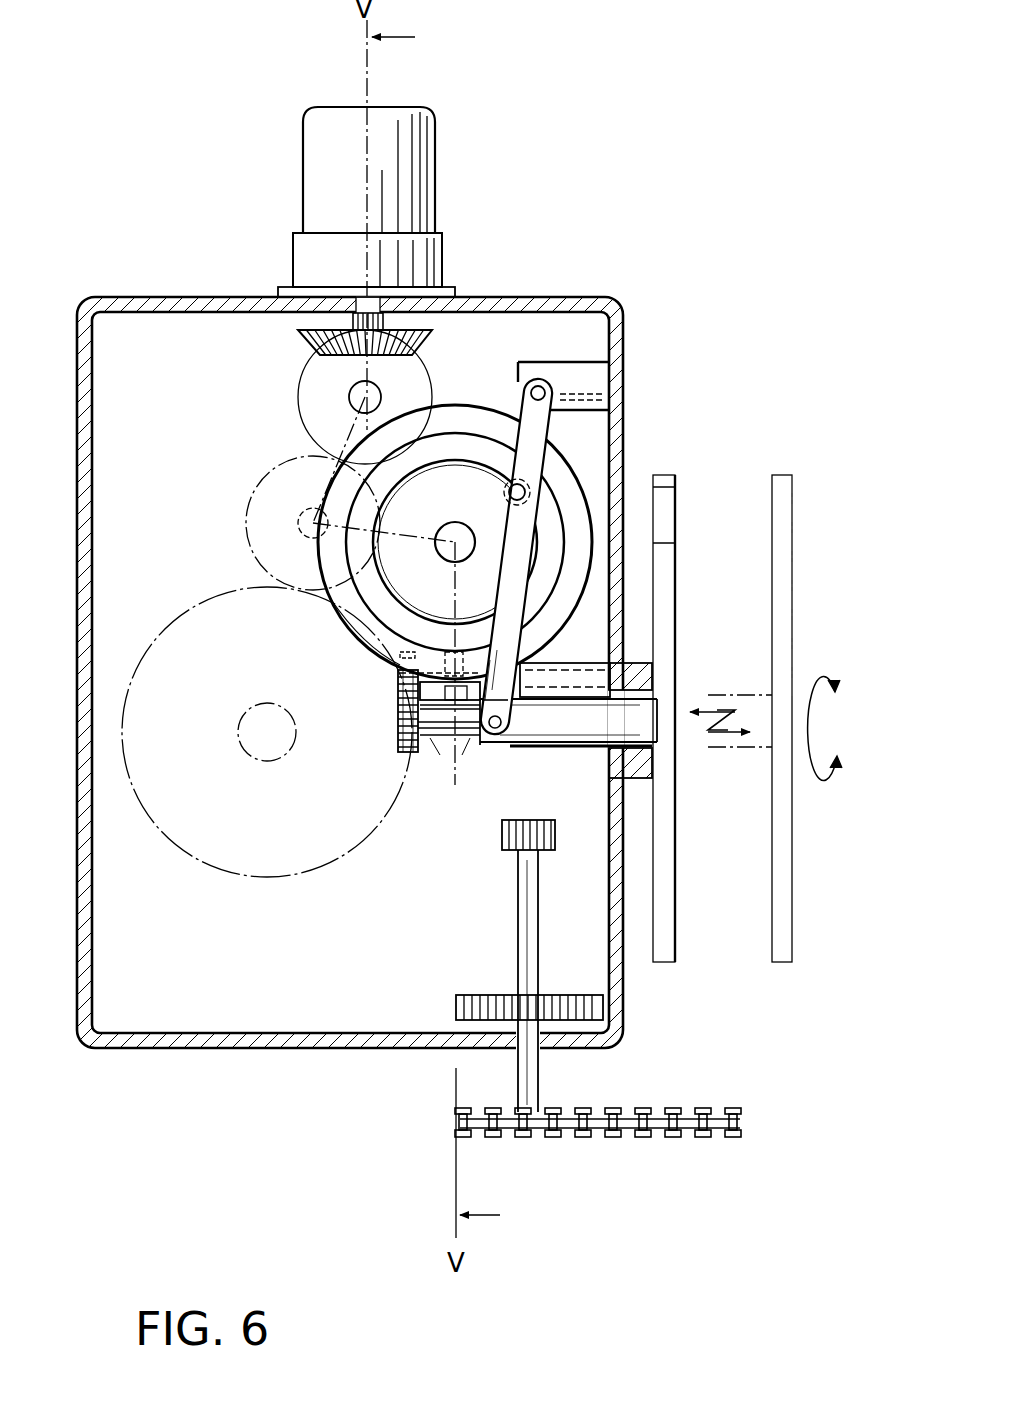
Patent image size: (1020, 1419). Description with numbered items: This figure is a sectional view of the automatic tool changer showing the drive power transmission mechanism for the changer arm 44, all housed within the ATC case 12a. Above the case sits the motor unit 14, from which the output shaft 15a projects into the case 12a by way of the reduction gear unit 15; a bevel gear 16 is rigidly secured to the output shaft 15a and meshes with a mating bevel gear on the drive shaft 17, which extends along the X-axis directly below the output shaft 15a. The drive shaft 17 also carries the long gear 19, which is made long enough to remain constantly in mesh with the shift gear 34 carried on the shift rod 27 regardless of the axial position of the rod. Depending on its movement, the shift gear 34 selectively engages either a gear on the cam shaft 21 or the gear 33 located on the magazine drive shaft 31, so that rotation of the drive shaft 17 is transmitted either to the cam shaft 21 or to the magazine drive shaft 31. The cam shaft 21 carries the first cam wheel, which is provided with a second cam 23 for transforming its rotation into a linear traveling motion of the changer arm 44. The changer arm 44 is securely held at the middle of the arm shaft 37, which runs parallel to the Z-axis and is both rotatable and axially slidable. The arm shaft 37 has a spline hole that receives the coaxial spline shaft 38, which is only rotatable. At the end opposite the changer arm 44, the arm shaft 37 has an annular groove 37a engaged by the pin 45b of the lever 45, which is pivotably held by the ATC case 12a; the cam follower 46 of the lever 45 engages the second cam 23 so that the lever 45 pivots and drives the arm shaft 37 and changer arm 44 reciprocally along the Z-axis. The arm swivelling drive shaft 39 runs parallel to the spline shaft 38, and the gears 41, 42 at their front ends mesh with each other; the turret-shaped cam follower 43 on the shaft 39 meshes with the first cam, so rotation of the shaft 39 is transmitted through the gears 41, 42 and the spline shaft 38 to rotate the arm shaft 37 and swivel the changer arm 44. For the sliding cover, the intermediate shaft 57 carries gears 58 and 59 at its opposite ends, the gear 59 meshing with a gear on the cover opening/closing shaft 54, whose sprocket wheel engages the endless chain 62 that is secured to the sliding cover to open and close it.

The ATC case 12a is at (620, 432).
The motor 14 is at (420, 143).
The reduction gear unit 15 is at (428, 252).
The output shaft 15a is at (358, 322).
The bevel gear 16 is at (437, 279).
The drive shaft 17 is at (422, 360).
The long gear 19 is at (302, 384).
The cam shaft 21 is at (326, 497).
The second cam 23 is at (328, 598).
The shift rod 27 is at (300, 540).
The magazine drive shaft 31 is at (256, 752).
The gear 33 is at (168, 628).
The shift gear 34 is at (292, 462).
The arm shaft 37 is at (640, 704).
The annular groove 37a is at (490, 755).
The spline shaft 38 is at (420, 750).
The arm swivelling drive shaft 39 is at (598, 655).
The gear 41 is at (398, 677).
The gear 42 is at (398, 708).
The turret-shaped cam follower 43 is at (400, 688).
The changer arm 44 is at (665, 880).
The lever 45 is at (510, 553).
The pin 45b is at (486, 745).
The cam follower 46 is at (522, 478).
The cover opening/closing shaft 54 is at (527, 1077).
The intermediate shaft 57 is at (522, 926).
The gear 58 is at (530, 820).
The gear 59 is at (465, 1000).
The endless chain 62 is at (687, 1123).